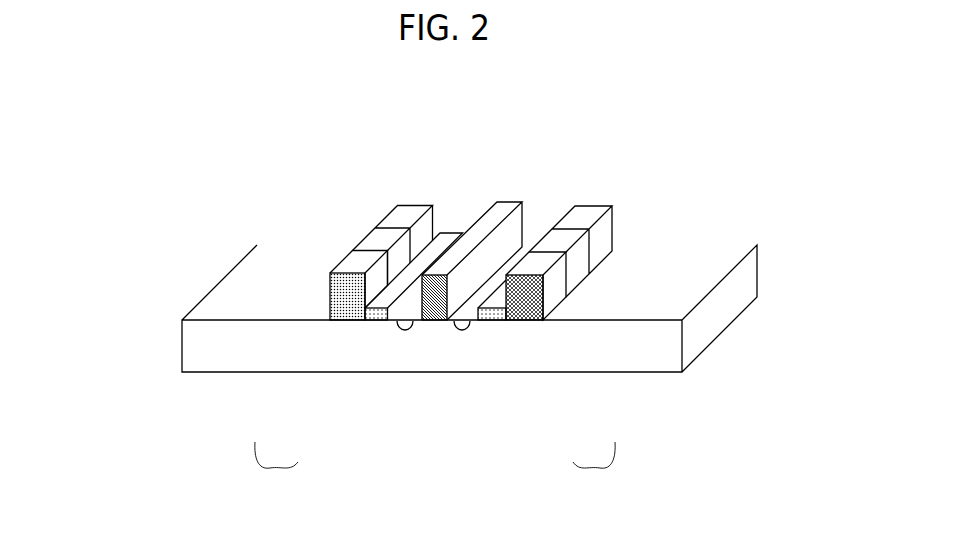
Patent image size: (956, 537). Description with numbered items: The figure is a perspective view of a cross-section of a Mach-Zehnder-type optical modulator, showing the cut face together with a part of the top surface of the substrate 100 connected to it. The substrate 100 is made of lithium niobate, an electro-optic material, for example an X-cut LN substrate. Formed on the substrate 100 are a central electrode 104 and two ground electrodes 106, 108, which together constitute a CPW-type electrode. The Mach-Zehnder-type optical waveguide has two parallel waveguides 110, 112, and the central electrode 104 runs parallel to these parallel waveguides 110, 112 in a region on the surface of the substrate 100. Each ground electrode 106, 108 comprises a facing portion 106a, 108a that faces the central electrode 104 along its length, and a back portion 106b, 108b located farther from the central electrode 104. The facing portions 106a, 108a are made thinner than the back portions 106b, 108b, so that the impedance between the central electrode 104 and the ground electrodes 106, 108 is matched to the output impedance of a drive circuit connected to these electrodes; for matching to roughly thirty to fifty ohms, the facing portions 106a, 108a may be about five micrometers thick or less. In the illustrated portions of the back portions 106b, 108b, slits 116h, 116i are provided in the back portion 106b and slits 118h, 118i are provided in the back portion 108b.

The substrate 100 is at (222, 306).
The central electrode 104 is at (435, 322).
The ground electrode 106 is at (599, 475).
The facing portion 106a is at (498, 321).
The back portion 106b is at (538, 321).
The ground electrode 108 is at (270, 475).
The facing portion 108a is at (365, 321).
The back portion 108b is at (332, 321).
The parallel waveguide 110 is at (462, 331).
The parallel waveguide 112 is at (402, 331).
The slit 116h is at (597, 212).
The slit 116i is at (570, 257).
The slit 118h is at (378, 222).
The slit 118i is at (353, 250).